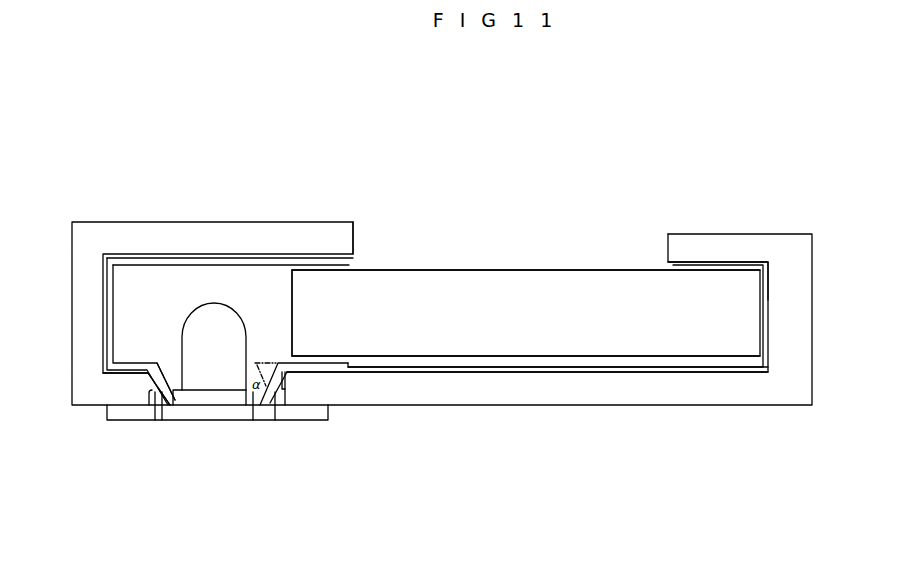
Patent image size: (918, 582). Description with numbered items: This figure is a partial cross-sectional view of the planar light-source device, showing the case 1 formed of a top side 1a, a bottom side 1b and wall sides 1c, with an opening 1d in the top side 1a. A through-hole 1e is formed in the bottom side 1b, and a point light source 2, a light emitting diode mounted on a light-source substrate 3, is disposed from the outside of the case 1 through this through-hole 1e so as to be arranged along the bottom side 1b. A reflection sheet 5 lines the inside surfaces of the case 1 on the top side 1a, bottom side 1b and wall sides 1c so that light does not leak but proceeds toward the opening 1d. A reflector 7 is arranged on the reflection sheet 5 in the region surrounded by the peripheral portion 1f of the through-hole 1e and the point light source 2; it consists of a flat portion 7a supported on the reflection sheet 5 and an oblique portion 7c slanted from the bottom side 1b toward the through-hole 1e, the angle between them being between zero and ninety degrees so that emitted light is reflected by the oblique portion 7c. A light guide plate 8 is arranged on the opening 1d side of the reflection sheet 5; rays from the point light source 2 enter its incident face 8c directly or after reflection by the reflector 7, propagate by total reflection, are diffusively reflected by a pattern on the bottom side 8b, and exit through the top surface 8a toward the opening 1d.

The case 1 is at (807, 393).
The top side 1a is at (718, 266).
The bottom side 1b is at (592, 373).
The wall sides 1c is at (103, 302).
The opening 1d is at (502, 270).
The through-hole 1e is at (255, 392).
The peripheral portion 1f is at (154, 392).
The point light source 2 is at (228, 372).
The light-source substrate 3 is at (318, 412).
The reflection sheet 5 is at (493, 373).
The reflector 7 is at (348, 370).
The flat portion 7a is at (122, 363).
The oblique portion 7c is at (161, 392).
The light guide plate 8 is at (633, 287).
The top surface 8a is at (470, 305).
The bottom side 8b is at (428, 357).
The incident face 8c is at (292, 300).